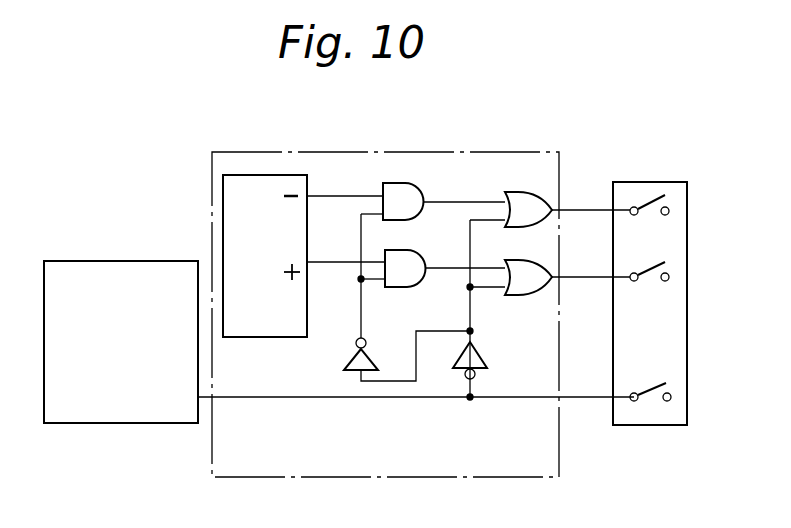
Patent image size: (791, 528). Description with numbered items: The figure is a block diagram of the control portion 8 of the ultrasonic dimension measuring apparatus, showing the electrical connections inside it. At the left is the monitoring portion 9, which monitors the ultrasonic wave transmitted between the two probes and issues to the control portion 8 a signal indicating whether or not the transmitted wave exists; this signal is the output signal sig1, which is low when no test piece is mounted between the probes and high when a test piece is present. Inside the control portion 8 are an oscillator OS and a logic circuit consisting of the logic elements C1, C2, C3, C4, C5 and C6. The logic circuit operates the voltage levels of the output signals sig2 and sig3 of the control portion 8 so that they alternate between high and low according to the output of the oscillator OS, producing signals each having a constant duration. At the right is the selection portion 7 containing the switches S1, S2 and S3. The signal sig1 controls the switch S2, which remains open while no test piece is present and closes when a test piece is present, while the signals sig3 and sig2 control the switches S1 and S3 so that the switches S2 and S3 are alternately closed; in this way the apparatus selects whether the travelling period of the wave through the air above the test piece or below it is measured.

The monitoring portion 9 is at (107, 261).
The selection portion 7 is at (612, 367).
The control portion 8 is at (561, 417).
The oscillator OS is at (265, 338).
The logic element C1 is at (407, 183).
The logic element C2 is at (402, 251).
The logic element C3 is at (508, 190).
The logic element C4 is at (518, 297).
The logic element C5 is at (364, 355).
The logic element C6 is at (480, 357).
The switch S1 is at (649, 217).
The switch S2 is at (653, 400).
The switch S3 is at (651, 283).
The output signal sig1 is at (278, 398).
The output signal sig2 is at (567, 279).
The output signal sig3 is at (563, 210).